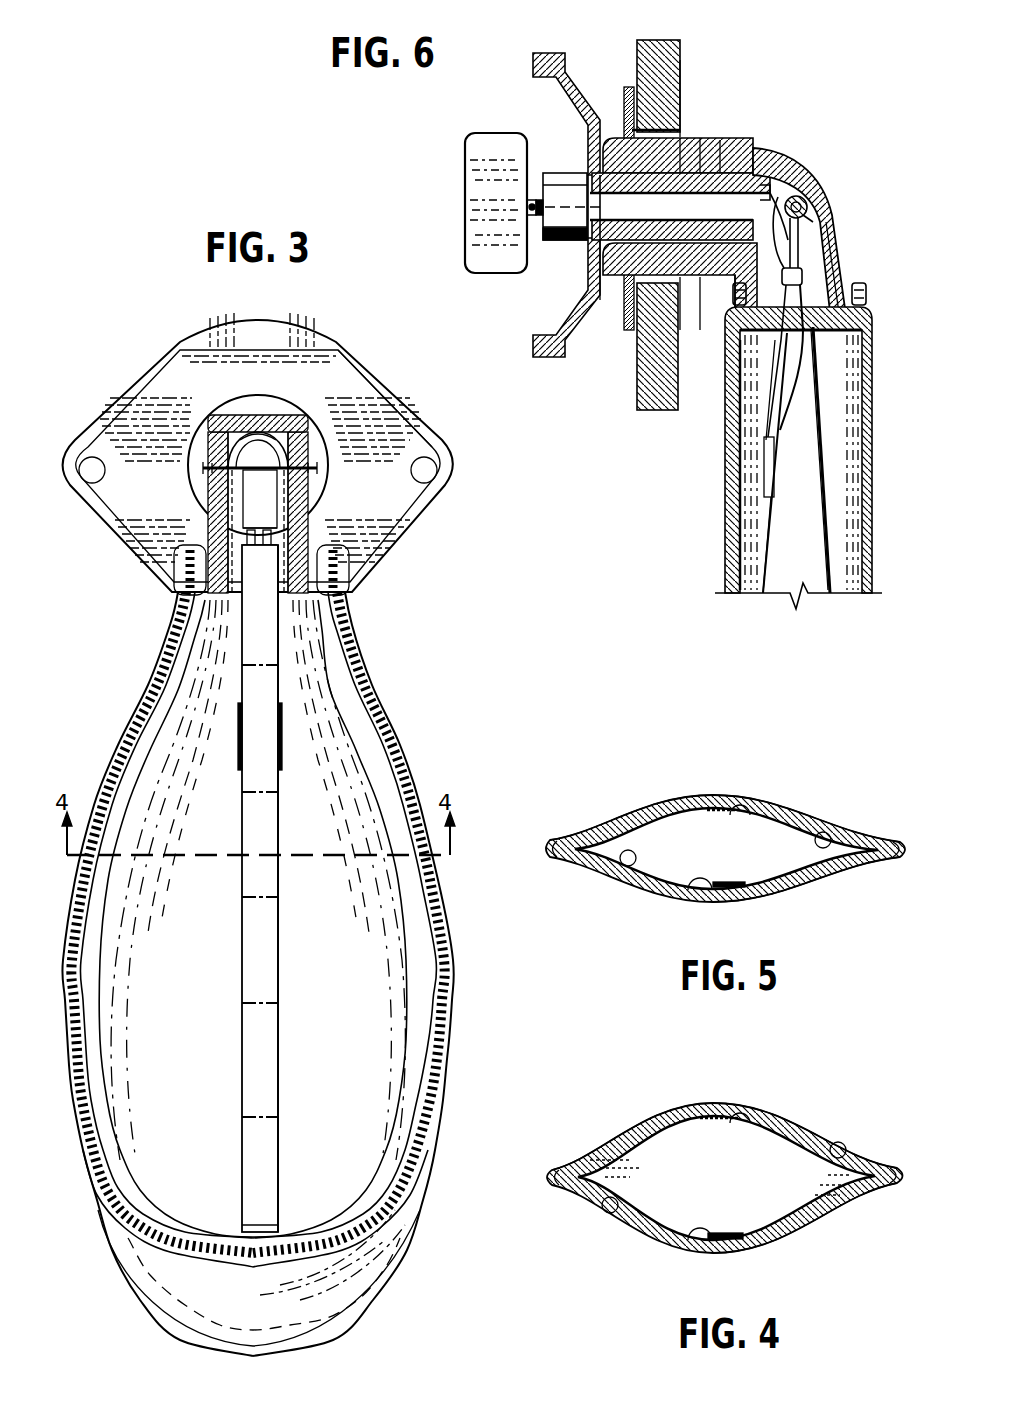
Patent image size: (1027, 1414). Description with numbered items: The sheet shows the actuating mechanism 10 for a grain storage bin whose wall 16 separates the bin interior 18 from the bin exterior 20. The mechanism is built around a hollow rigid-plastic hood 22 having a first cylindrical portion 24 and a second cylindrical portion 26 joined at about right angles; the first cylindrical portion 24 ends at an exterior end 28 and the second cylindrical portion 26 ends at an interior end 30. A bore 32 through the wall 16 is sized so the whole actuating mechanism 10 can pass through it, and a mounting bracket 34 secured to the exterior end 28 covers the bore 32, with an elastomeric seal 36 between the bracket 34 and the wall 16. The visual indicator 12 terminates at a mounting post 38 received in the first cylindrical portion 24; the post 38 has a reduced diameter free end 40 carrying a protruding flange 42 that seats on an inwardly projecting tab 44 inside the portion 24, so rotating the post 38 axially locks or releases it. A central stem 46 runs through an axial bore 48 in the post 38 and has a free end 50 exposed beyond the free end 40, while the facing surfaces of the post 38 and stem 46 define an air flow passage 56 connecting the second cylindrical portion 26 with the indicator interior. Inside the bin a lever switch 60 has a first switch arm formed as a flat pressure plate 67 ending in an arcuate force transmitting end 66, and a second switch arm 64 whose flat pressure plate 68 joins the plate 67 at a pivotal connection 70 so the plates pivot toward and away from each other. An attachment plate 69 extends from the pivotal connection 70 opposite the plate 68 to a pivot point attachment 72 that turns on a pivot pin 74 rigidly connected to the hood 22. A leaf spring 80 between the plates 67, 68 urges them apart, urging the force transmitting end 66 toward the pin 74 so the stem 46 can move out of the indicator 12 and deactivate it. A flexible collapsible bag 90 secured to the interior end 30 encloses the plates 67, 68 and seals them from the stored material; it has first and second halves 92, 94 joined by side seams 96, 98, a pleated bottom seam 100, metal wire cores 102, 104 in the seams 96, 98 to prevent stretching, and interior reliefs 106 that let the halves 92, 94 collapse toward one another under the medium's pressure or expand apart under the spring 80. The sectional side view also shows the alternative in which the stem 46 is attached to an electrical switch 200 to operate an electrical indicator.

In FIG. 3, the actuating mechanism 10 is at (387, 605).
In FIG. 6, the actuating mechanism 10 is at (857, 110).
In FIG. 3, the visual indicator 12 is at (183, 333).
In FIG. 6, the wall 16 is at (680, 77).
In FIG. 6, the bin interior 18 is at (795, 36).
In FIG. 6, the bin exterior 20 is at (560, 31).
In FIG. 3, the hollow hood 22 is at (255, 412).
In FIG. 6, the hollow hood 22 is at (773, 147).
In FIG. 6, the first cylindrical portion 24 is at (687, 153).
In FIG. 6, the second cylindrical portion 26 is at (835, 233).
In FIG. 6, the exterior end 28 is at (603, 300).
In FIG. 3, the interior end 30 is at (173, 623).
In FIG. 6, the interior end 30 is at (873, 362).
In FIG. 6, the bore 32 is at (688, 278).
In FIG. 3, the mounting bracket 34 is at (378, 428).
In FIG. 6, the mounting bracket 34 is at (623, 107).
In FIG. 6, the elastomeric seal 36 is at (631, 88).
In FIG. 3, the mounting post 38 is at (210, 507).
In FIG. 6, the mounting post 38 is at (703, 153).
In FIG. 6, the reduced diameter free end 40 is at (803, 277).
In FIG. 3, the protruding flange portion 42 is at (225, 445).
In FIG. 6, the protruding flange portion 42 is at (753, 160).
In FIG. 6, the inwardly projecting tab 44 is at (730, 180).
In FIG. 6, the stem 46 is at (562, 242).
In FIG. 6, the axial bore 48 is at (708, 255).
In FIG. 6, the free end 50 is at (783, 187).
In FIG. 6, the air flow passage 56 is at (585, 173).
In FIG. 3, the lever switch 60 is at (287, 950).
In FIG. 6, the lever switch 60 is at (833, 487).
In FIG. 3, the second switch arm 64 is at (240, 1003).
In FIG. 6, the force transmitting end 66 is at (797, 197).
In FIG. 6, the flat pressure plate 67 is at (763, 550).
In FIG. 5, the flat pressure plate 67 is at (697, 885).
In FIG. 4, the flat pressure plate 67 is at (690, 1243).
In FIG. 3, the flat pressure plate 68 is at (280, 1060).
In FIG. 6, the flat pressure plate 68 is at (830, 543).
In FIG. 5, the flat pressure plate 68 is at (760, 800).
In FIG. 4, the flat pressure plate 68 is at (760, 1105).
In FIG. 3, the attachment plate 69 is at (270, 510).
In FIG. 6, the attachment plate 69 is at (800, 243).
In FIG. 3, the pivotal connection 70 is at (273, 540).
In FIG. 6, the pivotal connection 70 is at (866, 298).
In FIG. 3, the pivot point attachment 72 is at (262, 430).
In FIG. 6, the pivot point attachment 72 is at (806, 200).
In FIG. 3, the pivot pin 74 is at (310, 445).
In FIG. 6, the pivot pin 74 is at (815, 217).
In FIG. 6, the leaf spring 80 is at (797, 393).
In FIG. 6, the flexible collapsible bag 90 is at (723, 480).
In FIG. 5, the first bag half 92 is at (775, 890).
In FIG. 4, the first bag half 92 is at (775, 1245).
In FIG. 5, the second bag half 94 is at (673, 800).
In FIG. 4, the second bag half 94 is at (640, 1118).
In FIG. 5, the side seam 96 is at (557, 843).
In FIG. 4, the side seam 96 is at (556, 1172).
In FIG. 5, the side seam 98 is at (902, 840).
In FIG. 4, the side seam 98 is at (893, 1165).
In FIG. 3, the pleated bottom seam 100 is at (353, 1300).
In FIG. 3, the metal wire core 102 is at (133, 740).
In FIG. 5, the metal wire core 102 is at (553, 858).
In FIG. 4, the metal wire core 102 is at (552, 1190).
In FIG. 3, the metal wire core 104 is at (390, 747).
In FIG. 5, the metal wire core 104 is at (885, 862).
In FIG. 4, the metal wire core 104 is at (875, 1195).
In FIG. 5, the reliefs 106 is at (815, 832).
In FIG. 4, the reliefs 106 is at (830, 1140).
In FIG. 6, the electrical switch 200 is at (460, 173).